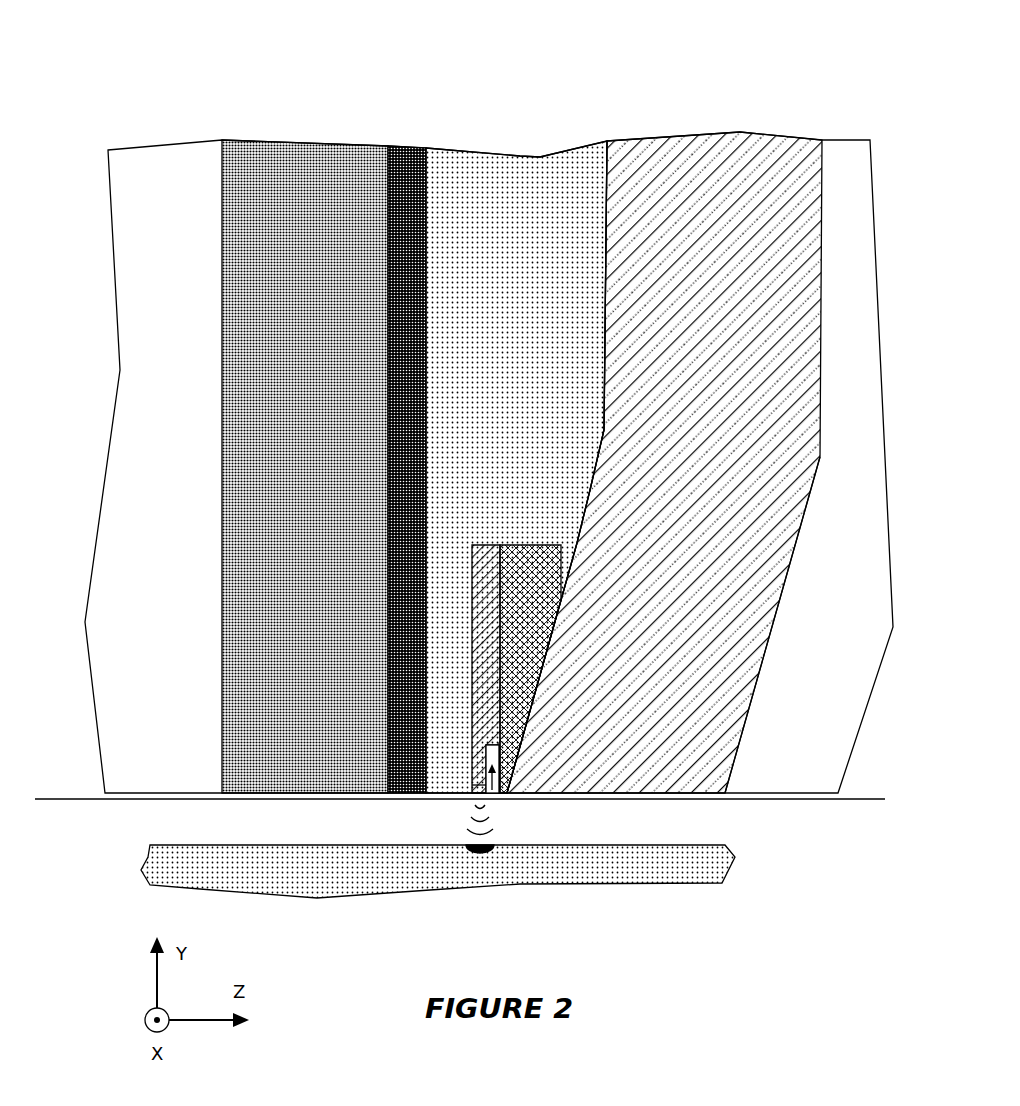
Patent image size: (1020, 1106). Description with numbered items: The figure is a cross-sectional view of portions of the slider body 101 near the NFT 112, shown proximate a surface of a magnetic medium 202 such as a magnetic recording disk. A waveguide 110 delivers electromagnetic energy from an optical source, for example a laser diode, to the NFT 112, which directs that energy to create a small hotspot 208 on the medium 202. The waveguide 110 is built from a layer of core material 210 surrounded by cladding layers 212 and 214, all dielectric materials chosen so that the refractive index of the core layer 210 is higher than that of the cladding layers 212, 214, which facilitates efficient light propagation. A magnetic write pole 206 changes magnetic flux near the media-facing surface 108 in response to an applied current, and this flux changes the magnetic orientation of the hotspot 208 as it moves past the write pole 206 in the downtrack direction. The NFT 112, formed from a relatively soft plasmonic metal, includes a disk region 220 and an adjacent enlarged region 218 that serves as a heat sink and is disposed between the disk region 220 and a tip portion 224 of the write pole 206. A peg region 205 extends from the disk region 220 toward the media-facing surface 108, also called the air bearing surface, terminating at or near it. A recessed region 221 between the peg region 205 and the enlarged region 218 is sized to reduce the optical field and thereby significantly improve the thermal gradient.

The slider body 101 is at (150, 74).
The waveguide 110 is at (414, 429).
The cladding layer 214 is at (320, 146).
The core layer 210 is at (405, 148).
The cladding layer 212 is at (516, 449).
The magnetic write pole 206 is at (730, 132).
The enlarged region 218 is at (560, 540).
The disk region 220 is at (472, 573).
The NFT 112 is at (547, 531).
The recessed region 221 is at (498, 793).
The peg region 205 is at (477, 798).
The tip portion 224 is at (643, 680).
The media-facing surface 108 is at (782, 801).
The magnetic medium 202 is at (206, 876).
The hotspot 208 is at (480, 862).